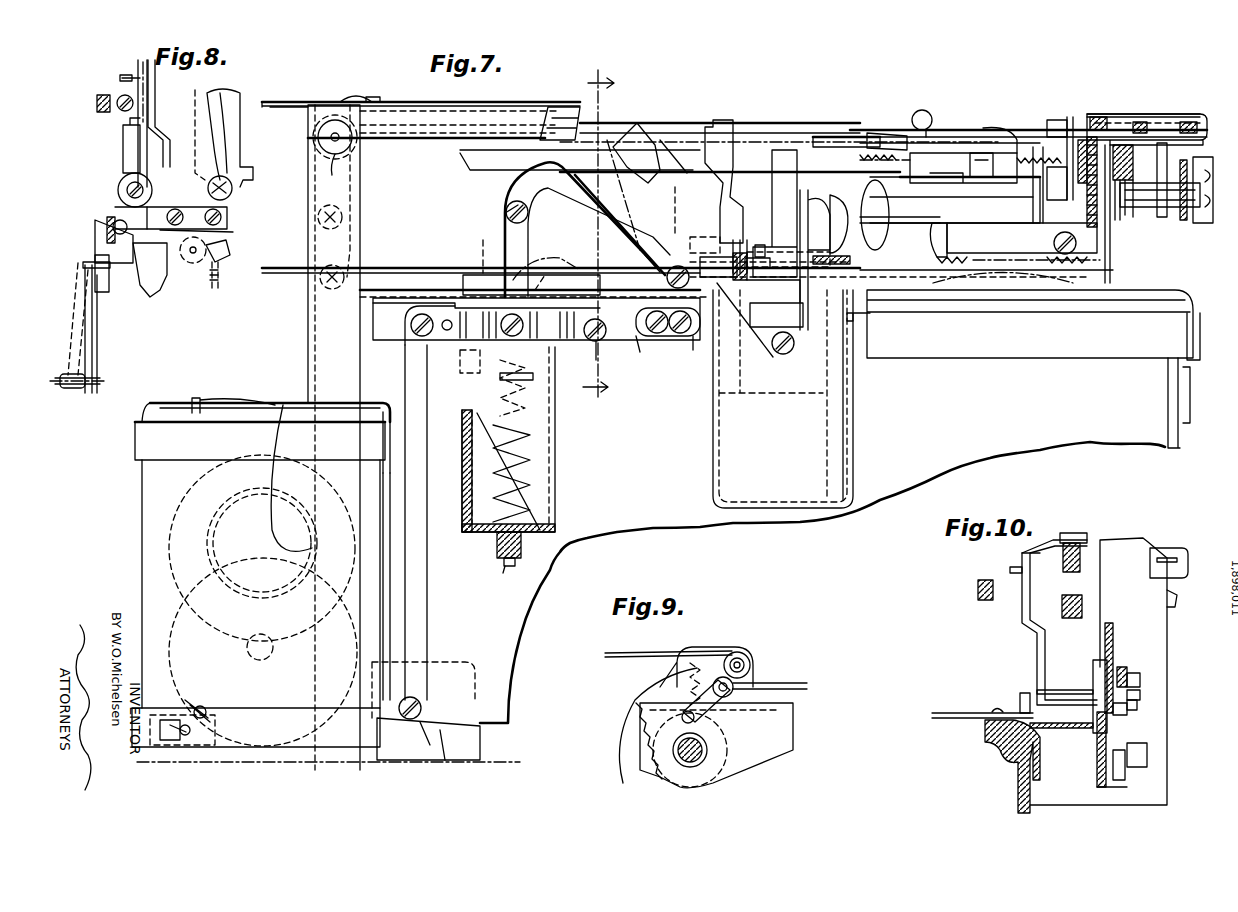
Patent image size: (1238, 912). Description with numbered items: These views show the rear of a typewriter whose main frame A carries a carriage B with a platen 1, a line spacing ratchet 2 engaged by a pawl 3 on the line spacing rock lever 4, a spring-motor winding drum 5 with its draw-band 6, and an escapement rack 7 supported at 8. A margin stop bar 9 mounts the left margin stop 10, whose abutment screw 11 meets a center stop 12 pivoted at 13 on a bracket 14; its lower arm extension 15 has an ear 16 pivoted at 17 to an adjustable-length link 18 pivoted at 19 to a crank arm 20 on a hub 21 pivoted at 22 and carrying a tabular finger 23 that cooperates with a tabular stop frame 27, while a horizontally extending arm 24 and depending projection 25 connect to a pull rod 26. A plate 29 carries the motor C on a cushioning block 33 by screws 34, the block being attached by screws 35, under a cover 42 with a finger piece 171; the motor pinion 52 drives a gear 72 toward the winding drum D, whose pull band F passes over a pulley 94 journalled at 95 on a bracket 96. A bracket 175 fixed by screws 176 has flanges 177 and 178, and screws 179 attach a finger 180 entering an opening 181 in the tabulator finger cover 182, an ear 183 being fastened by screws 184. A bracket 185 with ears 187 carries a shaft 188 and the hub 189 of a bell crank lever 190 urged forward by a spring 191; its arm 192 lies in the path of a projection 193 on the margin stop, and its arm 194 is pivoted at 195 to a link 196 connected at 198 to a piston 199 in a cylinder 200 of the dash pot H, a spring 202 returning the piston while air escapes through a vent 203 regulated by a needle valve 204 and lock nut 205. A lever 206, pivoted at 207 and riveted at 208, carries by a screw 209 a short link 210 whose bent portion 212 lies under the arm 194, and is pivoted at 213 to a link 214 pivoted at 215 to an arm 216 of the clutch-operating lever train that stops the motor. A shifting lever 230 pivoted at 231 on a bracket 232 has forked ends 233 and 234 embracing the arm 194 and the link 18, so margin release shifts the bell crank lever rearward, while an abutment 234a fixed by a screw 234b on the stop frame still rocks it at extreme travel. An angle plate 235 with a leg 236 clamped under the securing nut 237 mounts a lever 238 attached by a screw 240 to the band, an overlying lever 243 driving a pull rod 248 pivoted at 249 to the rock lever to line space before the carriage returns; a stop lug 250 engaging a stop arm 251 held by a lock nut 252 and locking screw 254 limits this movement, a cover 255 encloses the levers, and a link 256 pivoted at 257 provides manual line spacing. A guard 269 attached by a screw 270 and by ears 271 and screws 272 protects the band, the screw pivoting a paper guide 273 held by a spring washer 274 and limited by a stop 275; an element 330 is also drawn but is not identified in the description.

In FIG. 7, the platen 1 is at (950, 213).
In FIG. 9, the platen 1 is at (630, 712).
In FIG. 7, the line spacing ratchet 2 is at (1085, 212).
In FIG. 9, the line spacing ratchet 2 is at (635, 745).
In FIG. 9, the pawl 3 is at (720, 647).
In FIG. 9, the line spacing rock lever 4 is at (728, 700).
In FIG. 7, the winding drum 5 is at (988, 283).
In FIG. 7, the draw-band 6 is at (932, 283).
In FIG. 7, the escapement rack 7 is at (935, 258).
In FIG. 7, the escapement rack support 8 is at (1053, 244).
In FIG. 7, the margin stop bar 9 is at (885, 150).
In FIG. 8, the margin stop bar 9 is at (97, 103).
In FIG. 10, the margin stop bar 9 is at (978, 592).
In FIG. 7, the left margin stop 10 is at (598, 234).
In FIG. 7, the adjustable abutment screw 11 is at (978, 177).
In FIG. 8, the adjustable abutment screw 11 is at (117, 108).
In FIG. 7, the center stop 12 is at (785, 150).
In FIG. 8, the center stop 12 is at (123, 137).
In FIG. 8, the pivot 13 is at (118, 187).
In FIG. 7, the bracket 14 is at (834, 218).
In FIG. 8, the bracket 14 is at (155, 290).
In FIG. 7, the lower arm extension 15 is at (850, 260).
In FIG. 8, the lower arm extension 15 is at (95, 235).
In FIG. 8, the ear 16 is at (83, 263).
In FIG. 8, the pivotal connection 17 is at (115, 262).
In FIG. 7, the adjustable-length link 18 is at (750, 258).
In FIG. 8, the adjustable-length link 18 is at (155, 207).
In FIG. 7, the pivotal connection 19 is at (758, 245).
In FIG. 8, the pivotal connection 19 is at (232, 196).
In FIG. 7, the crank arm 20 is at (773, 304).
In FIG. 8, the crank arm 20 is at (228, 240).
In FIG. 7, the hub 21 is at (780, 356).
In FIG. 8, the hub 21 is at (210, 270).
In FIG. 7, the pivot 22 is at (870, 316).
In FIG. 8, the pivot 22 is at (206, 252).
In FIG. 7, the tabular finger 23 is at (812, 222).
In FIG. 8, the tabular finger 23 is at (228, 98).
In FIG. 8, the horizontally extending arm 24 is at (100, 300).
In FIG. 8, the depending projection 25 is at (97, 363).
In FIG. 8, the pull rod 26 is at (70, 388).
In FIG. 7, the tabular stop frame 27 is at (1070, 117).
In FIG. 10, the tabular stop frame 27 is at (1064, 595).
In FIG. 7, the plate 29 is at (150, 747).
In FIG. 7, the block 33 is at (190, 700).
In FIG. 7, the screws 34 is at (188, 745).
In FIG. 7, the screws 35 is at (170, 715).
In FIG. 7, the housing or cover 42 is at (142, 446).
In FIG. 7, the pinion 52 is at (273, 661).
In FIG. 7, the gear 72 is at (186, 596).
In FIG. 7, the pulley 94 is at (350, 160).
In FIG. 7, the journal 95 is at (333, 175).
In FIG. 7, the bracket 96 is at (360, 182).
In FIG. 7, the finger piece 171 is at (196, 398).
In FIG. 7, the bracket 175 is at (432, 298).
In FIG. 10, the bracket 175 is at (965, 713).
In FIG. 10, the screws 176 is at (995, 710).
In FIG. 7, the flange 177 is at (395, 298).
In FIG. 7, the flange 178 is at (640, 352).
In FIG. 10, the flange 178 is at (1107, 728).
In FIG. 7, the screws 179 is at (665, 340).
In FIG. 10, the screws 179 is at (1147, 752).
In FIG. 7, the finger 180 is at (700, 350).
In FIG. 10, the finger 180 is at (1125, 772).
In FIG. 10, the opening 181 is at (1118, 787).
In FIG. 7, the tabulator finger cover 182 is at (853, 410).
In FIG. 10, the tabulator finger cover 182 is at (1173, 635).
In FIG. 7, the ear 183 is at (352, 247).
In FIG. 7, the screws 184 is at (343, 217).
In FIG. 10, the bracket 185 is at (1068, 728).
In FIG. 7, the ears 187 is at (645, 258).
In FIG. 10, the ears 187 is at (1023, 693).
In FIG. 7, the shaft 188 is at (723, 267).
In FIG. 10, the shaft 188 is at (1127, 710).
In FIG. 10, the hub 189 is at (1045, 690).
In FIG. 7, the bell crank lever 190 is at (644, 210).
In FIG. 10, the bell crank lever 190 is at (1015, 628).
In FIG. 7, the spring 191 is at (483, 248).
In FIG. 10, the spring 191 is at (1137, 703).
In FIG. 7, the arm 192 is at (722, 120).
In FIG. 8, the arm 192 is at (138, 62).
In FIG. 10, the arm 192 is at (1022, 555).
In FIG. 7, the projection 193 is at (825, 137).
In FIG. 8, the projection 193 is at (120, 78).
In FIG. 10, the projection 193 is at (1010, 570).
In FIG. 7, the arm 194 is at (552, 190).
In FIG. 10, the arm 194 is at (1112, 640).
In FIG. 7, the pivotal connection 195 is at (508, 200).
In FIG. 7, the link 196 is at (506, 212).
In FIG. 7, the pivotal connection 198 is at (460, 362).
In FIG. 7, the piston 199 is at (500, 378).
In FIG. 7, the cylinder 200 is at (557, 470).
In FIG. 7, the spring 202 is at (470, 455).
In FIG. 7, the vent 203 is at (497, 548).
In FIG. 7, the needle valve 204 is at (505, 572).
In FIG. 7, the lock nut 205 is at (512, 566).
In FIG. 7, the lever 206 is at (520, 412).
In FIG. 7, the pivots 207 is at (535, 262).
In FIG. 7, the rivets 208 is at (405, 352).
In FIG. 7, the screw 209 is at (598, 360).
In FIG. 7, the short link 210 is at (565, 275).
In FIG. 7, the horizontally disposed portion 212 is at (665, 275).
In FIG. 7, the pivotal connection 213 is at (410, 320).
In FIG. 7, the link 214 is at (430, 548).
In FIG. 7, the pivot 215 is at (447, 745).
In FIG. 7, the arm 216 is at (418, 740).
In FIG. 10, the shifting lever 230 is at (1140, 667).
In FIG. 7, the pivot 231 is at (700, 237).
In FIG. 7, the bracket 232 is at (740, 393).
In FIG. 10, the bracket 232 is at (1093, 680).
In FIG. 7, the forked end 233 is at (660, 255).
In FIG. 10, the forked end 233 is at (1122, 667).
In FIG. 7, the forked end 234 is at (740, 240).
In FIG. 10, the abutment 234a is at (1022, 592).
In FIG. 10, the screw 234b is at (1068, 533).
In FIG. 7, the angle plate 235 is at (1145, 122).
In FIG. 7, the leg 236 is at (1110, 283).
In FIG. 7, the tabular stop frame securing nut 237 is at (1118, 222).
In FIG. 7, the lever 238 is at (1200, 223).
In FIG. 7, the screw 240 is at (1180, 118).
In FIG. 7, the lever 243 is at (1113, 114).
In FIG. 7, the pull rod 248 is at (1097, 114).
In FIG. 9, the pull rod 248 is at (612, 651).
In FIG. 9, the pivotal connection 249 is at (745, 658).
In FIG. 7, the stop lug 250 is at (1175, 207).
In FIG. 7, the stop arm 251 is at (1130, 190).
In FIG. 7, the lock nut 252 is at (1167, 215).
In FIG. 7, the locking screw 254 is at (1137, 200).
In FIG. 7, the cover 255 is at (1145, 114).
In FIG. 9, the link 256 is at (795, 685).
In FIG. 9, the pivotal connection 257 is at (738, 685).
In FIG. 7, the guard 269 is at (560, 108).
In FIG. 10, the guard 269 is at (1150, 565).
In FIG. 7, the screw 270 is at (356, 95).
In FIG. 10, the ears 271 is at (1105, 540).
In FIG. 10, the screws 272 is at (1140, 538).
In FIG. 7, the paper guide 273 is at (280, 107).
In FIG. 7, the spring washer 274 is at (310, 98).
In FIG. 7, the stop 275 is at (380, 98).
In FIG. 7, the line 330 is at (692, 209).
In FIG. 7, the main frame A is at (1170, 448).
In FIG. 10, the main frame A is at (997, 757).
In FIG. 7, the carriage B is at (1106, 297).
In FIG. 7, the motor C is at (170, 618).
In FIG. 7, the winding drum D is at (198, 544).
In FIG. 7, the pull band F is at (867, 131).
In FIG. 10, the pull band F is at (1185, 558).
In FIG. 7, the dash pot H is at (566, 500).